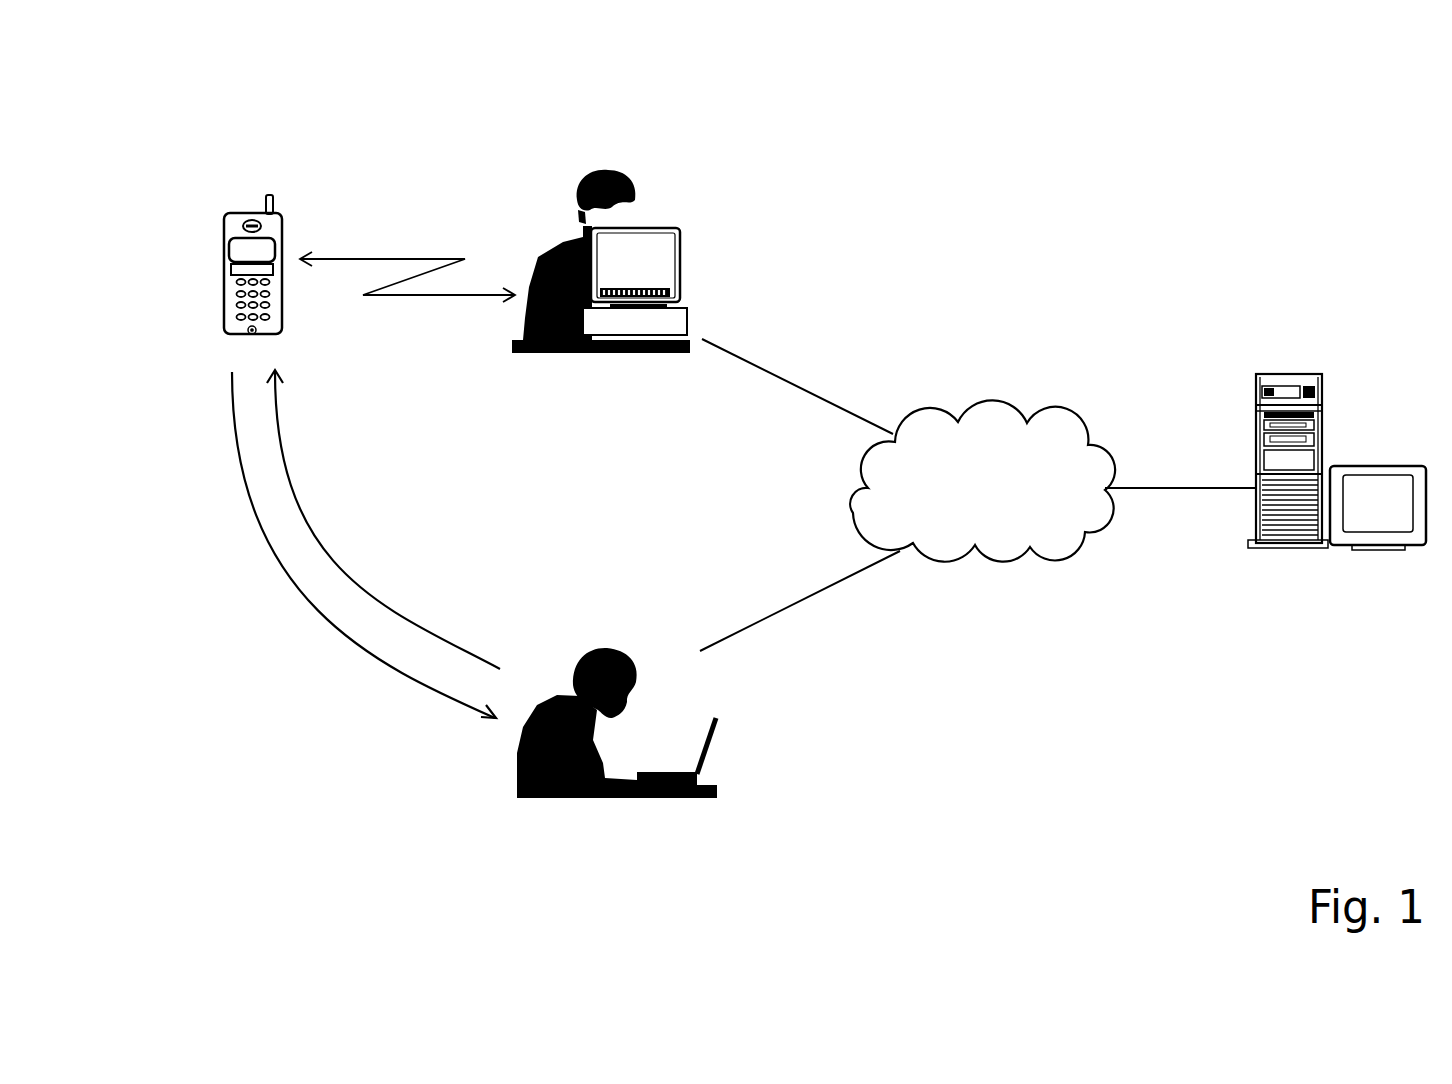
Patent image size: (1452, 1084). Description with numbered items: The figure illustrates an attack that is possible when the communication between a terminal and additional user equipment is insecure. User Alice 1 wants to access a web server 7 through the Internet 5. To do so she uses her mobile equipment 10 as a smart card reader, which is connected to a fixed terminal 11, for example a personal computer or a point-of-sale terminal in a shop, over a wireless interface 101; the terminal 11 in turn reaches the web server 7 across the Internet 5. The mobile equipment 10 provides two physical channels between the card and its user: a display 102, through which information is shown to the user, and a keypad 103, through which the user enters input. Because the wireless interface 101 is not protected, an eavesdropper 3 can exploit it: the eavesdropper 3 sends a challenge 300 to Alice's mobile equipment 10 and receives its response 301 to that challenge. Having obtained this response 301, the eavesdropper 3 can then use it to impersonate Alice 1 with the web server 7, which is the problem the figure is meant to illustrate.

The user Alice 1 is at (639, 223).
The eavesdropper 3 is at (538, 797).
The Internet 5 is at (982, 480).
The web server 7 is at (1324, 438).
The mobile equipment 10 is at (251, 257).
The fixed terminal 11 is at (660, 280).
The wireless interface 101 is at (407, 264).
The display of the user's equipment 102 is at (245, 247).
The keypad of the user's equipment 103 is at (240, 316).
The challenge 300 is at (383, 519).
The response 301 is at (364, 545).